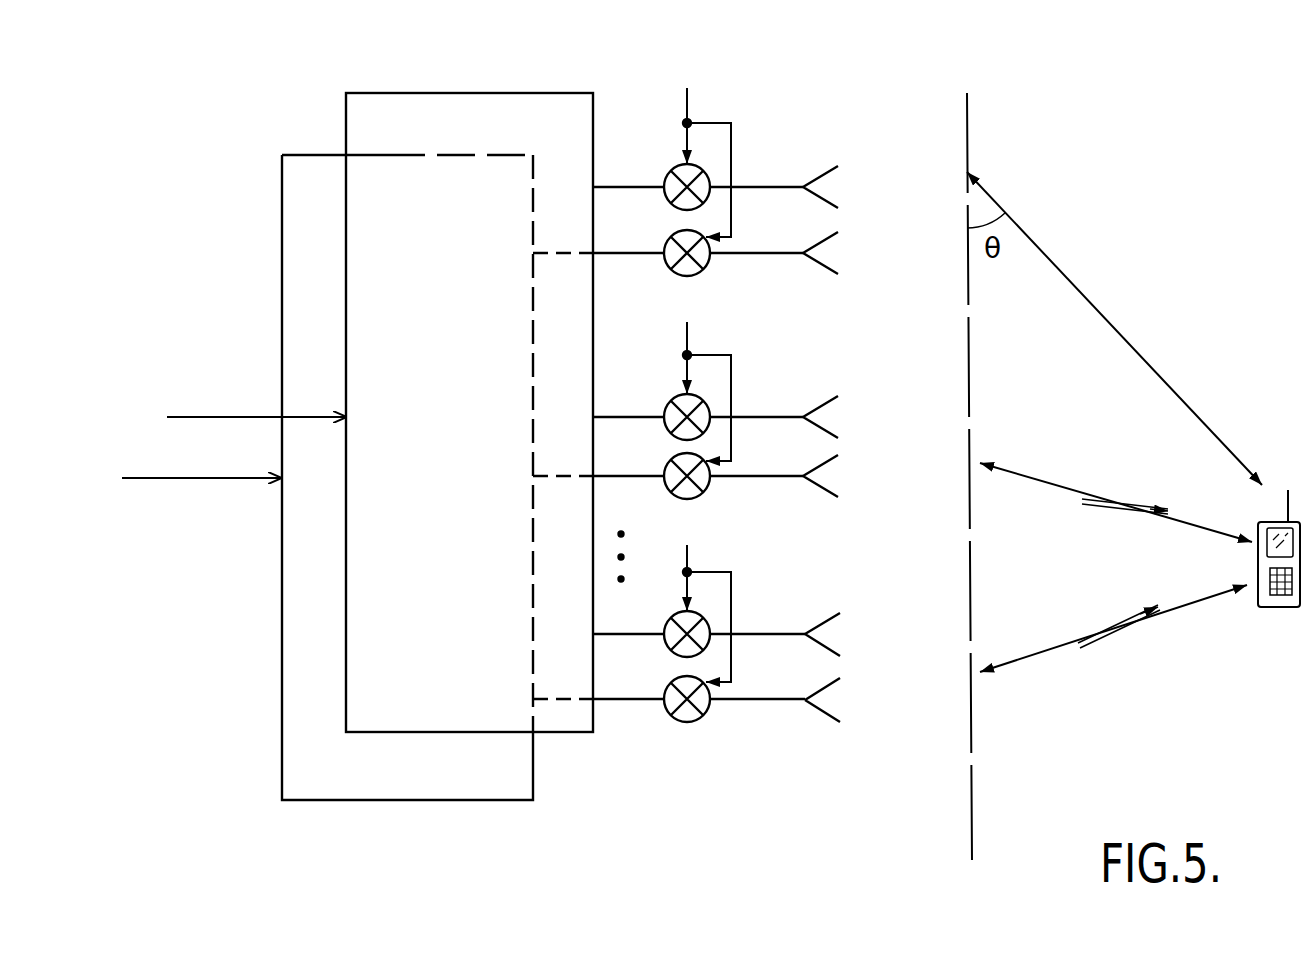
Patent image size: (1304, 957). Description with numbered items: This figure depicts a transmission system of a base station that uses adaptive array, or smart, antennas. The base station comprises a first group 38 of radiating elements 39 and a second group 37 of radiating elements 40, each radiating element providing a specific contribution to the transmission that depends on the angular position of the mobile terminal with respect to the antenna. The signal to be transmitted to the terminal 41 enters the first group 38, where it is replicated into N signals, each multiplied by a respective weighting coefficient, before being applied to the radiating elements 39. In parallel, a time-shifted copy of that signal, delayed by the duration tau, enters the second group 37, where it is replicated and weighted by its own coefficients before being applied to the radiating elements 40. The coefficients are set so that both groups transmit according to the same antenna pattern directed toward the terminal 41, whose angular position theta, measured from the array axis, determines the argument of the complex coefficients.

The second group of radiating elements 37 is at (280, 180).
The first group of radiating elements 38 is at (390, 92).
The radiating element 39 is at (793, 596).
The radiating element 40 is at (792, 727).
The mobile terminal 41 is at (1280, 607).